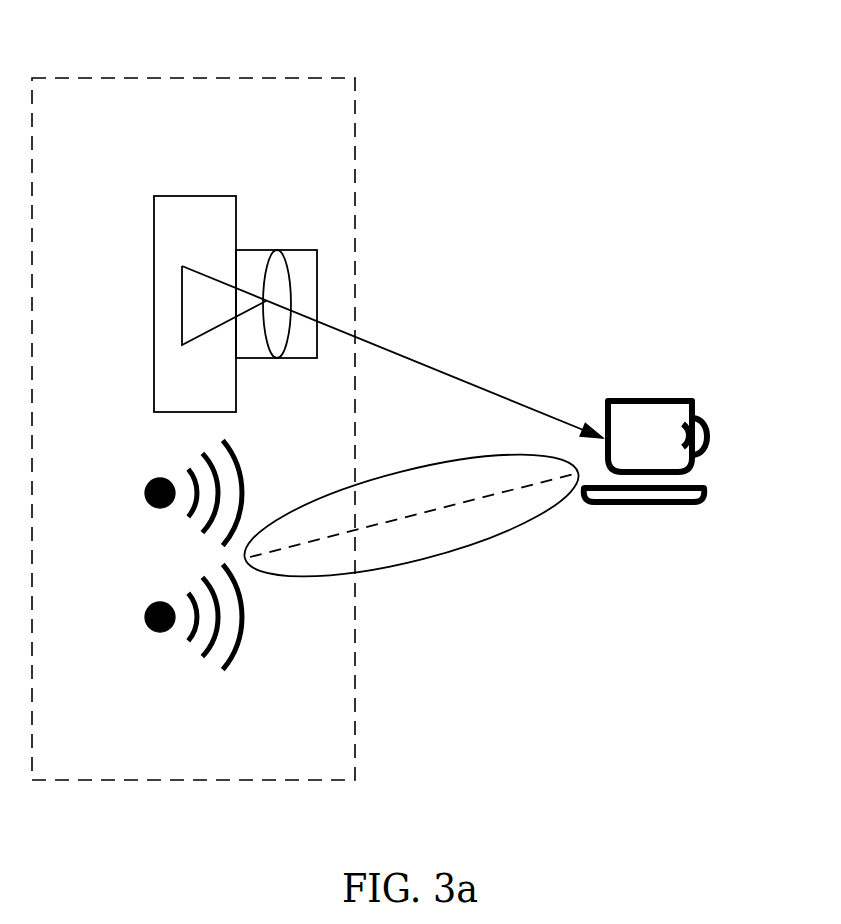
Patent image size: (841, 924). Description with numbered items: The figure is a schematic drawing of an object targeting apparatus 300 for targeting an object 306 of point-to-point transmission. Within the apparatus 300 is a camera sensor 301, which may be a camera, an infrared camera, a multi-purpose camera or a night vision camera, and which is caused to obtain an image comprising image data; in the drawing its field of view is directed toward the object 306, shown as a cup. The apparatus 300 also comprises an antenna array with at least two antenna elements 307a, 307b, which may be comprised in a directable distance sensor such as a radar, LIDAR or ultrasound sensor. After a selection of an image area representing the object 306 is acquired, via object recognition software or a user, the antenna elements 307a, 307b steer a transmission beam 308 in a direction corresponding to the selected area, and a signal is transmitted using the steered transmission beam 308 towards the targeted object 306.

The object targeting apparatus 300 is at (197, 78).
The camera sensor 301 is at (196, 196).
The object 306 is at (637, 398).
The antenna element 307a is at (147, 488).
The antenna element 307b is at (147, 612).
The transmission beam 308 is at (380, 480).